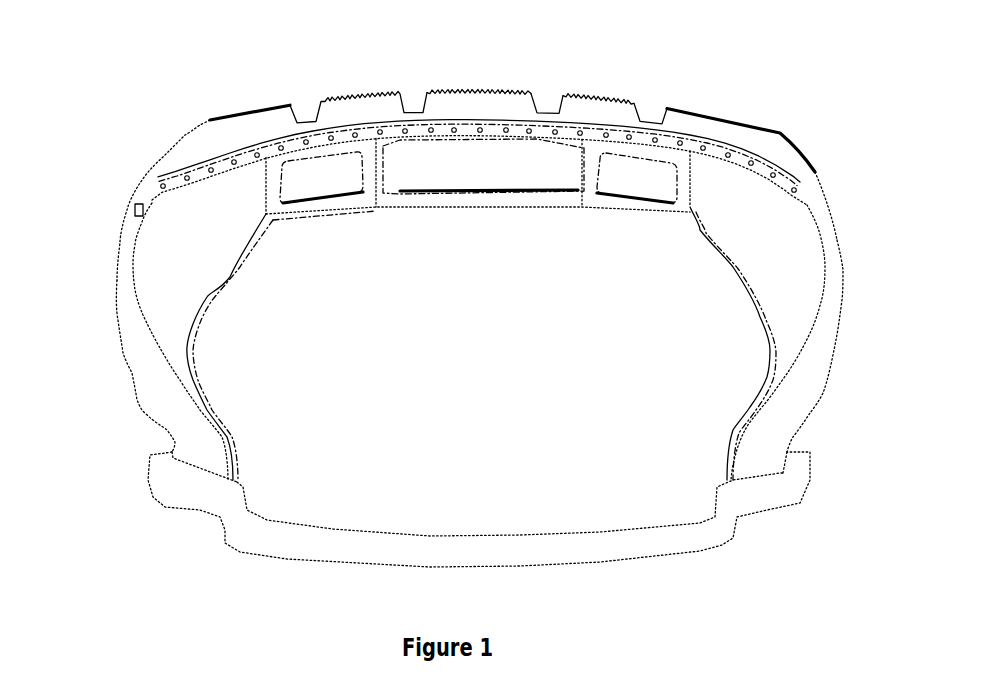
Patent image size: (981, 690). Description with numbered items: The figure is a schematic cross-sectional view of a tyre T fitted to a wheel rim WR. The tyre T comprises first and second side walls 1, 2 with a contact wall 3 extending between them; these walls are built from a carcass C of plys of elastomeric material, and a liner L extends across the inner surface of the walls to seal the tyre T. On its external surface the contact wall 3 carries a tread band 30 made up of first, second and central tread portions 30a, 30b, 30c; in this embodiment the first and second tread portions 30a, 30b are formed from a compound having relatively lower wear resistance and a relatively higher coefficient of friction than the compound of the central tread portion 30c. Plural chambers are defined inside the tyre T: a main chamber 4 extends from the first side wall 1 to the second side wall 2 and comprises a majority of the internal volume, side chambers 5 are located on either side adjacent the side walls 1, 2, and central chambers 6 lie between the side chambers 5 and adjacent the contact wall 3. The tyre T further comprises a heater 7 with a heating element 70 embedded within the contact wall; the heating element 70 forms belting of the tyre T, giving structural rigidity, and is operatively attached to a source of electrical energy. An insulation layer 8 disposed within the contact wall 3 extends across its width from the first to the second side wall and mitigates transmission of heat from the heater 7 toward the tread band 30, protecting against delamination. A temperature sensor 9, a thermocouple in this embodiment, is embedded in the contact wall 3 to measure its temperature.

The tyre T is at (777, 72).
The first side wall 1 is at (133, 373).
The second side wall 2 is at (810, 397).
The contact wall 3 is at (507, 86).
The tread band 30 is at (603, 110).
The first tread portion 30a is at (228, 118).
The second tread portion 30b is at (722, 120).
The central tread portion 30c is at (480, 92).
The main chamber 4 is at (298, 468).
The side chamber 5 is at (155, 295).
The central chamber 6 is at (322, 188).
The heater 7 is at (134, 109).
The heating element 70 is at (240, 157).
The insulation layer 8 is at (160, 178).
The temperature sensor 9 is at (133, 213).
The liner L is at (803, 232).
The carcass C is at (823, 340).
The wheel rim WR is at (589, 562).